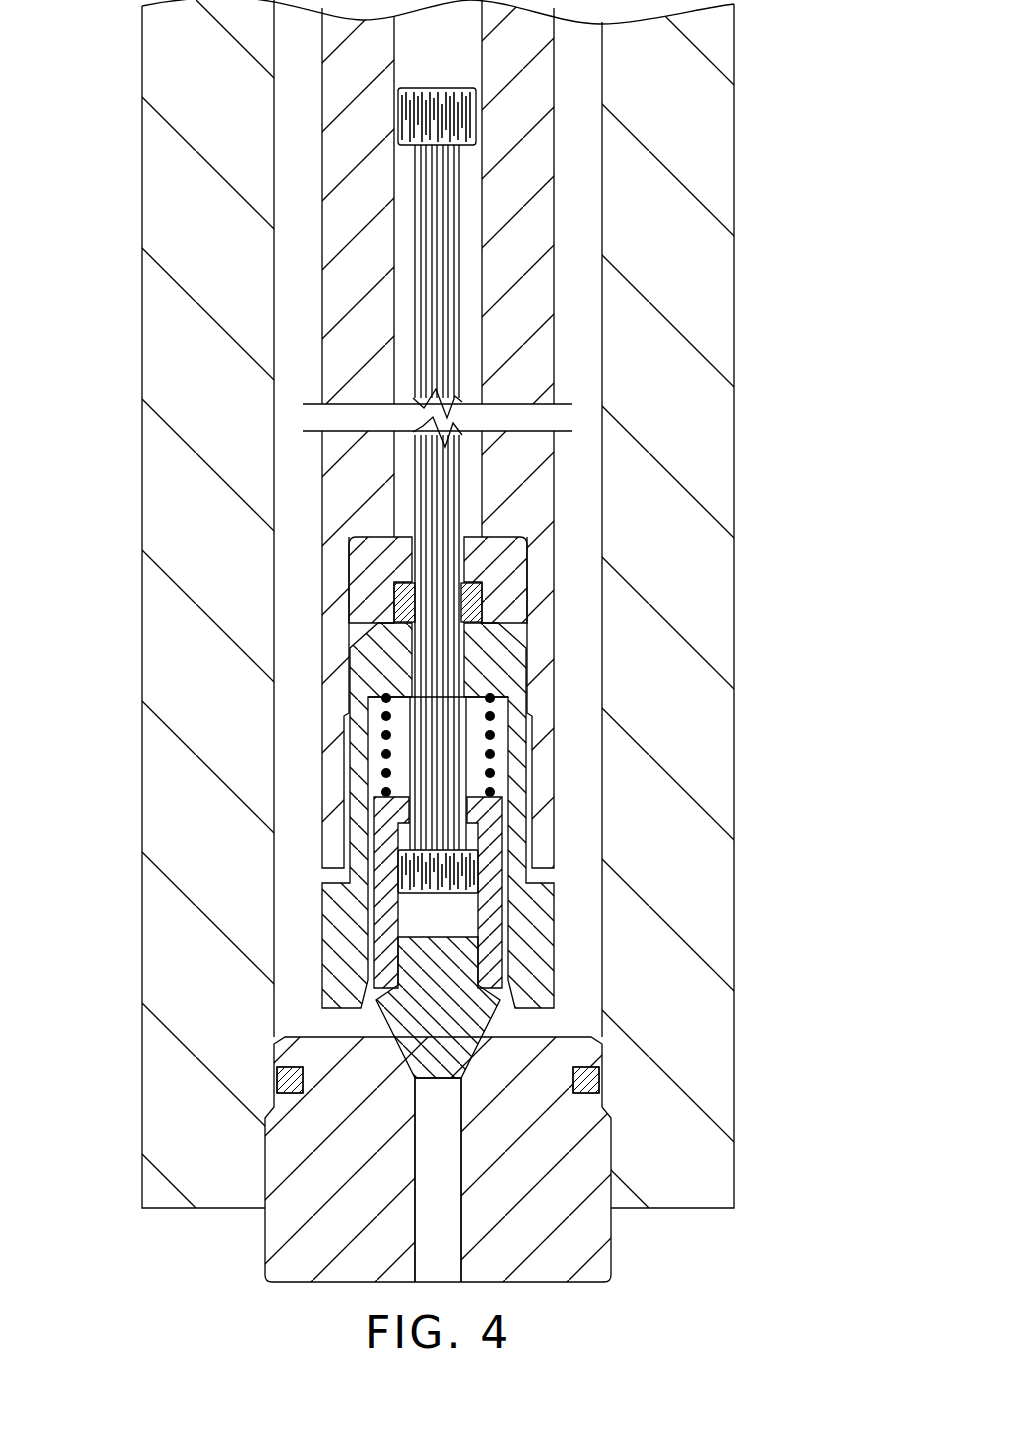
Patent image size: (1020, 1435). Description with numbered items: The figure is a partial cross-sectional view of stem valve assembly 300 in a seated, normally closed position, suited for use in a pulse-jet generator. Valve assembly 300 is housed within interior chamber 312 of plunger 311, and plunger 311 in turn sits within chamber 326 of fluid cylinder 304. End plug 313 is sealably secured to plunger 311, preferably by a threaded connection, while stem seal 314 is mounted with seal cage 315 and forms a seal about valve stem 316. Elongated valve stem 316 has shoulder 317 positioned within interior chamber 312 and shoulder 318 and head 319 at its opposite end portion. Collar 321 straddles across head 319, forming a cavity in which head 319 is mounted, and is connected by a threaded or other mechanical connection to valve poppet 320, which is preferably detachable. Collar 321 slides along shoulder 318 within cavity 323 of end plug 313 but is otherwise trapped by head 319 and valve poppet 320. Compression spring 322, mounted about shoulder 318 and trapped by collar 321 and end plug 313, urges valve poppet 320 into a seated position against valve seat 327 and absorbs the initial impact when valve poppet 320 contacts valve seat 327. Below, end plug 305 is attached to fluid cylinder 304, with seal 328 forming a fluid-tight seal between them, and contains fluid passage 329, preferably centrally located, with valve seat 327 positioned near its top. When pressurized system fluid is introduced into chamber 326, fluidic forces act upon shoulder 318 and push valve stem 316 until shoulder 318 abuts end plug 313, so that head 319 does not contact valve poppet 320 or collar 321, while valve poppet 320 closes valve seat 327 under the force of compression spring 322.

The stem valve assembly 300 is at (778, 122).
The fluid cylinder 304 is at (180, 500).
The end plug 305 is at (305, 1257).
The plunger 311 is at (358, 52).
The interior chamber 312 is at (393, 65).
The end plug 313 is at (345, 960).
The stem seal 314 is at (400, 598).
The seal cage 315 is at (372, 615).
The valve stem 316 is at (472, 228).
The shoulder 317 is at (487, 120).
The shoulder 318 is at (438, 765).
The head 319 is at (452, 868).
The valve poppet 320 is at (464, 1007).
The collar 321 is at (495, 930).
The compression spring 322 is at (498, 745).
The cavity 323 is at (377, 778).
The chamber 326 is at (580, 490).
The valve seat 327 is at (393, 1052).
The seal 328 is at (275, 1078).
The fluid passage 329 is at (442, 1180).